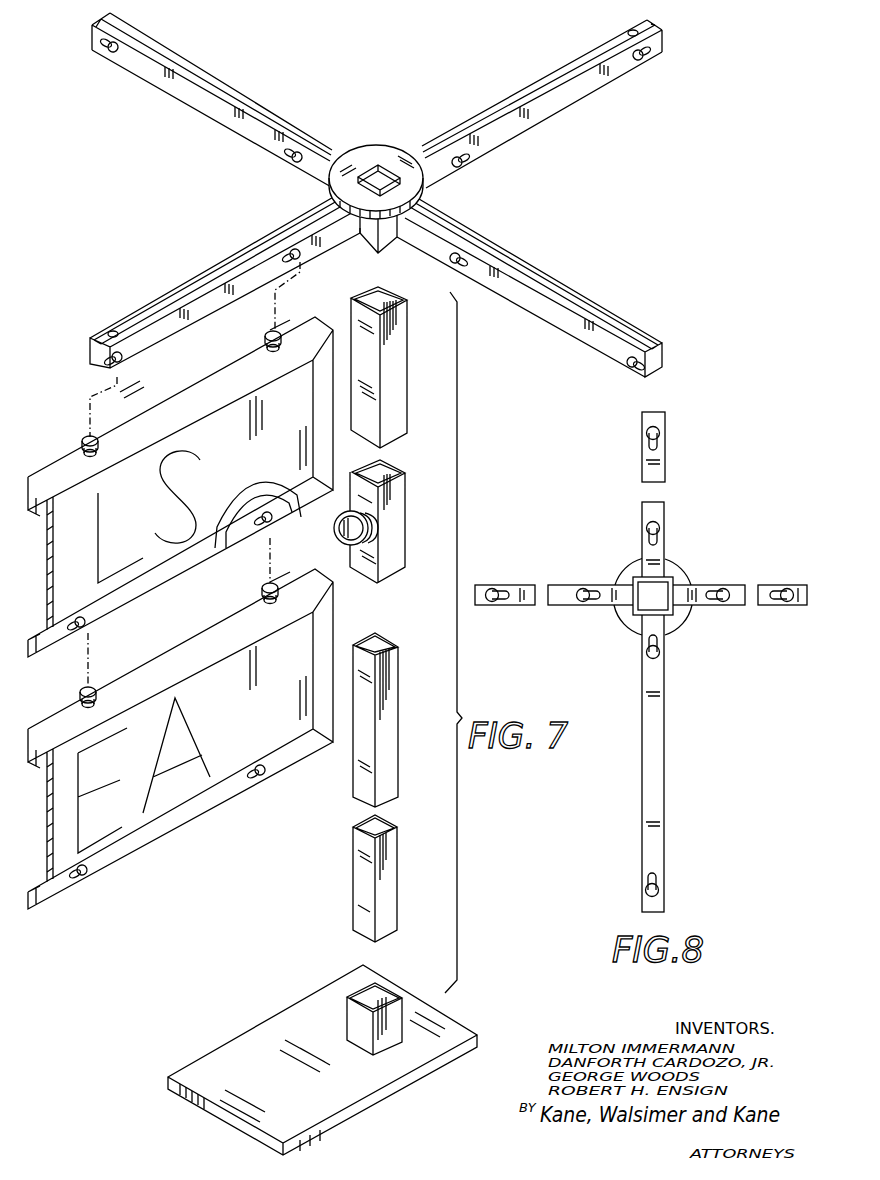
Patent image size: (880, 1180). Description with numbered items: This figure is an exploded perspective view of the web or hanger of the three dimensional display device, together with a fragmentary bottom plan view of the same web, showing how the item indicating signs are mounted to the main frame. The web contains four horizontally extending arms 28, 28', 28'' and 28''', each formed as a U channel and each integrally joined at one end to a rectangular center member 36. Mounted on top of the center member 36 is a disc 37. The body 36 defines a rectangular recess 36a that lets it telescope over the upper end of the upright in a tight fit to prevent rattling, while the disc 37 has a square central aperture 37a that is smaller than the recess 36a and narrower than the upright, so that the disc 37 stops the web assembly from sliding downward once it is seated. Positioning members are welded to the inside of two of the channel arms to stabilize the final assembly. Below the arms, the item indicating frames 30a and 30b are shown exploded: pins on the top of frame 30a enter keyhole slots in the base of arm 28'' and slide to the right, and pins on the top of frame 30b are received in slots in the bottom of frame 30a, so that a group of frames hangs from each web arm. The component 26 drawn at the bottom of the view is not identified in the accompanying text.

In FIG. 7, the base 26 is at (298, 1012).
In FIG. 7, the web arm 28 is at (568, 104).
In FIG. 8, the web arm 28 is at (733, 610).
In FIG. 7, the web arm 28' is at (212, 98).
In FIG. 8, the web arm 28' is at (683, 447).
In FIG. 7, the web arm 28'' is at (225, 278).
In FIG. 8, the web arm 28'' is at (557, 579).
In FIG. 7, the web arm 28''' is at (539, 286).
In FIG. 8, the web arm 28''' is at (681, 707).
In FIG. 7, the item indicating frame 30a is at (57, 468).
In FIG. 7, the item indicating frame 30b is at (63, 728).
In FIG. 7, the rectangular center member 36 is at (388, 240).
In FIG. 7, the rectangular recess 36a is at (366, 246).
In FIG. 7, the disc 37 is at (395, 150).
In FIG. 7, the square central aperture 37a is at (365, 176).